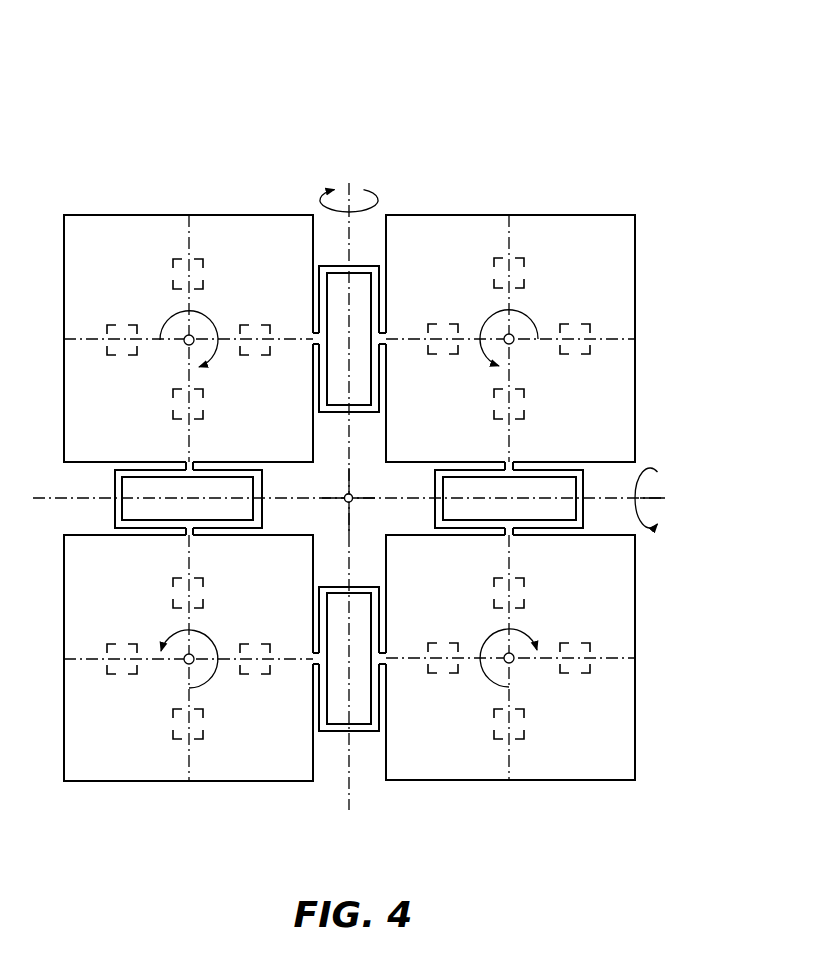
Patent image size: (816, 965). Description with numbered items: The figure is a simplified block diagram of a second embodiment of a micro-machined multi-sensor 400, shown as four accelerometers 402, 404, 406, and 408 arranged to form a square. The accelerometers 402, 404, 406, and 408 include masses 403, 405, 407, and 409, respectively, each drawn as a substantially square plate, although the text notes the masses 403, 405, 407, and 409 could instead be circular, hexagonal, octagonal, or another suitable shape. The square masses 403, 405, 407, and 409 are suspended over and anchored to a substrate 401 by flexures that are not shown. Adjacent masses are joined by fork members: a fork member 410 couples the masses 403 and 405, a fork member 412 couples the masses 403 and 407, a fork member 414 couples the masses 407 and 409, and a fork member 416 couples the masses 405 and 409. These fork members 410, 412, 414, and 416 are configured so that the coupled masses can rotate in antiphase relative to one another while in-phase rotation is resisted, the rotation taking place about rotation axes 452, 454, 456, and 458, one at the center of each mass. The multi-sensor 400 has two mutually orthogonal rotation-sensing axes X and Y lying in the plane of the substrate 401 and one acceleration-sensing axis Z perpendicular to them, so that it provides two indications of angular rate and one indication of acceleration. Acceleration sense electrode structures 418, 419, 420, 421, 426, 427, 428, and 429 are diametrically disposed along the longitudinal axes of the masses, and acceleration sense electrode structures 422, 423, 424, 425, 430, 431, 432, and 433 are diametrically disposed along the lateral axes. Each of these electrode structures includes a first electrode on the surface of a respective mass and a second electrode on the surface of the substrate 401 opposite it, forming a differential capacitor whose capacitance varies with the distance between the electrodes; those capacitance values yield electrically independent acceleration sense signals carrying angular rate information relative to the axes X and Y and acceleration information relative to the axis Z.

The micro-machined multi-sensor 400 is at (130, 63).
The substrate 401 is at (648, 559).
The accelerometer 402 is at (137, 213).
The mass 403 is at (277, 462).
The accelerometer 404 is at (457, 213).
The mass 405 is at (635, 433).
The accelerometer 406 is at (92, 533).
The mass 407 is at (240, 781).
The accelerometer 408 is at (410, 533).
The mass 409 is at (562, 781).
The fork member 410 is at (367, 412).
The fork member 412 is at (115, 490).
The fork member 414 is at (366, 587).
The fork member 416 is at (435, 490).
The acceleration sense electrode structure 418 is at (172, 262).
The acceleration sense electrode structure 419 is at (172, 418).
The acceleration sense electrode structure 420 is at (493, 262).
The acceleration sense electrode structure 421 is at (493, 418).
The acceleration sense electrode structure 422 is at (132, 325).
The acceleration sense electrode structure 423 is at (244, 325).
The acceleration sense electrode structure 424 is at (452, 325).
The acceleration sense electrode structure 425 is at (565, 325).
The acceleration sense electrode structure 426 is at (172, 581).
The acceleration sense electrode structure 427 is at (172, 737).
The acceleration sense electrode structure 428 is at (493, 581).
The acceleration sense electrode structure 429 is at (493, 737).
The acceleration sense electrode structure 430 is at (132, 645).
The acceleration sense electrode structure 431 is at (244, 645).
The acceleration sense electrode structure 432 is at (452, 645).
The acceleration sense electrode structure 433 is at (565, 645).
The rotation axis 452 is at (182, 347).
The rotation axis 454 is at (513, 347).
The rotation axis 456 is at (182, 667).
The rotation axis 458 is at (513, 663).